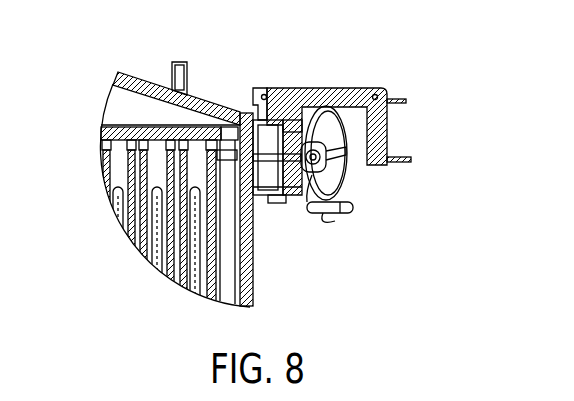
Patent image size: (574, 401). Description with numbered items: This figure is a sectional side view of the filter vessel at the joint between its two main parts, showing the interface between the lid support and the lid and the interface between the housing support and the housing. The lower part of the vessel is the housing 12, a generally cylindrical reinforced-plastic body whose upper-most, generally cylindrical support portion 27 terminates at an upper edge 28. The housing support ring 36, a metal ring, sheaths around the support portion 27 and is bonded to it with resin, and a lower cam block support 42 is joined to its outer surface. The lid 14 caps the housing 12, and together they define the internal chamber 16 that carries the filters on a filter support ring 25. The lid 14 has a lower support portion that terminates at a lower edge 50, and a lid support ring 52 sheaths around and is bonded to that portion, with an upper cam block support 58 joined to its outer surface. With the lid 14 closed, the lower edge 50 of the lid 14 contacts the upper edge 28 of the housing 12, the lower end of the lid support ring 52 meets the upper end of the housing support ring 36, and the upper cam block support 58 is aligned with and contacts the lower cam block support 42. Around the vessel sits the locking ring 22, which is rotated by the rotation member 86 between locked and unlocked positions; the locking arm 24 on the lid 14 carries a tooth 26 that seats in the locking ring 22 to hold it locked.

The housing 12 is at (247, 276).
The lid 14 is at (140, 72).
The internal chamber 16 is at (107, 160).
The locking ring 22 is at (388, 168).
The locking arm 24 is at (387, 119).
The filter support ring 25 is at (110, 128).
The tooth 26 is at (304, 150).
The support portion 27 is at (252, 180).
The upper edge 28 is at (250, 158).
The housing support ring 36 is at (248, 247).
The lower cam block support 42 is at (280, 208).
The lower edge 50 is at (255, 158).
The lid support ring 52 is at (266, 117).
The upper cam block support 58 is at (290, 130).
The rotation member 86 is at (372, 199).